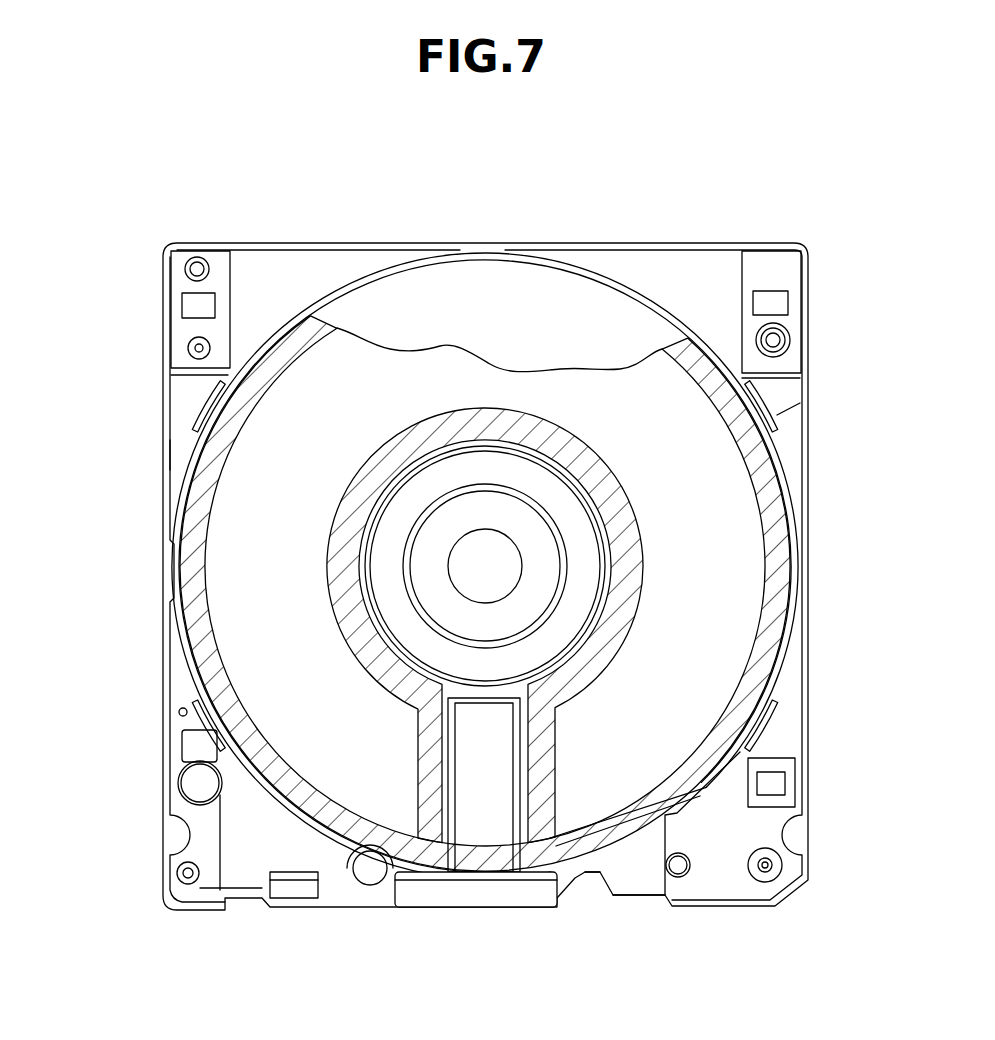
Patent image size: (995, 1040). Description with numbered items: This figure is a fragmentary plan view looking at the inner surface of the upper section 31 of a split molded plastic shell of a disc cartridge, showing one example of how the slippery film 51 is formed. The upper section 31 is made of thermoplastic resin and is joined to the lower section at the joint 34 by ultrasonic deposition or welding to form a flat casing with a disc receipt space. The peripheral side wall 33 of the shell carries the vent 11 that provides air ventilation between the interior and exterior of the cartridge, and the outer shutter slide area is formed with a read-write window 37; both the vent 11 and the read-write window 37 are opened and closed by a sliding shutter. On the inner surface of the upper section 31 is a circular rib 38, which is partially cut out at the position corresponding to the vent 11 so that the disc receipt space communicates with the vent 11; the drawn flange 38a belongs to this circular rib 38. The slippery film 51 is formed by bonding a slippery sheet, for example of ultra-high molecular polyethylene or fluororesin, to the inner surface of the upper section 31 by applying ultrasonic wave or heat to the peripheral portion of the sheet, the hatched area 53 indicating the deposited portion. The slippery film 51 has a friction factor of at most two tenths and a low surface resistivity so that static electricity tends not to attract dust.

The vent 11 is at (628, 905).
The upper section 31 is at (158, 348).
The peripheral side wall 33 is at (175, 455).
The joint 34 is at (790, 342).
The read-write window 37 is at (461, 870).
The circular rib 38 is at (740, 738).
The ring flange 38a is at (655, 835).
The slippery film 51 is at (612, 385).
The hatched support ring 53 is at (625, 540).